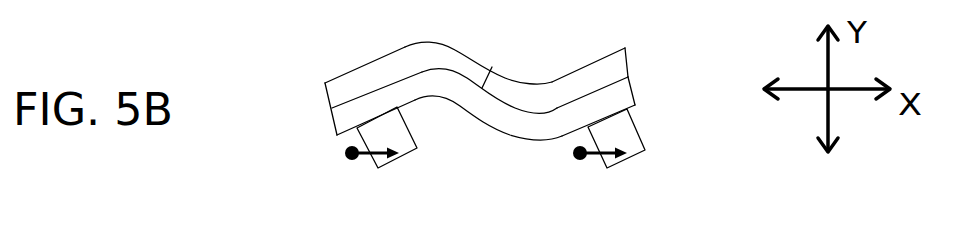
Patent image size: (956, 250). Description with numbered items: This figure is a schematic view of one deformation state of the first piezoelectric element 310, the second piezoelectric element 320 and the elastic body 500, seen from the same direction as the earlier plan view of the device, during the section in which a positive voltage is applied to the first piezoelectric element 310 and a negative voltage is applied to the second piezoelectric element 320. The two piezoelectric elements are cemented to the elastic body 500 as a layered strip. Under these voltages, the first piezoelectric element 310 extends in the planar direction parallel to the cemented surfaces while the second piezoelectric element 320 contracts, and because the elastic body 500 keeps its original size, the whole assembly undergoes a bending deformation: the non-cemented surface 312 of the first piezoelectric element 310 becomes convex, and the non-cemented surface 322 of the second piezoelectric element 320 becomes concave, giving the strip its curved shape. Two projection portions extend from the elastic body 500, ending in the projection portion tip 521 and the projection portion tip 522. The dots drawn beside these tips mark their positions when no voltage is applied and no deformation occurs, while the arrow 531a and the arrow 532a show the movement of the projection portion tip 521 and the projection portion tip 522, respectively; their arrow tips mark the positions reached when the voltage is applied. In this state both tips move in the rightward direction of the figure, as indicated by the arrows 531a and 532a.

The first piezoelectric element 310 is at (330, 96).
The non-cemented surface of the first piezoelectric element 312 is at (437, 45).
The second piezoelectric element 320 is at (624, 48).
The non-cemented surface of the second piezoelectric element 322 is at (617, 52).
The elastic body 500 is at (635, 90).
The projection portion tip 521 is at (405, 157).
The projection portion tip 522 is at (632, 157).
The arrow 531a is at (362, 160).
The arrow 532a is at (590, 158).